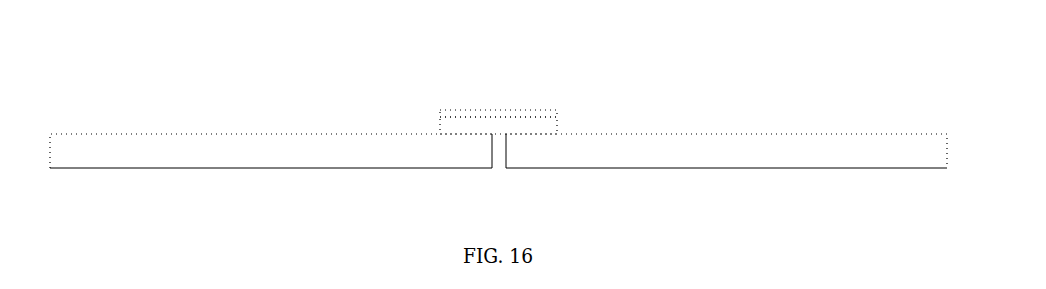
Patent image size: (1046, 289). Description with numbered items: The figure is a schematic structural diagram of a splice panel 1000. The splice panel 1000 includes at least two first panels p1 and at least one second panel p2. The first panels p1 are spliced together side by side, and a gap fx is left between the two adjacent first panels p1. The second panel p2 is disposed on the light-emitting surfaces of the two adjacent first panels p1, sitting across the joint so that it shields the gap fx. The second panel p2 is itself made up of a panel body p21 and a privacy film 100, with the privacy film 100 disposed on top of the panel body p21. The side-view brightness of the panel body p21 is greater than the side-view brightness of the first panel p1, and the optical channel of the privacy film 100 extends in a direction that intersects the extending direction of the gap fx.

The splice panel 1000 is at (939, 67).
The first panel p1 is at (224, 147).
The second panel p2 is at (533, 53).
The panel body p21 is at (458, 125).
The privacy film 100 is at (517, 113).
The gap fx is at (499, 168).